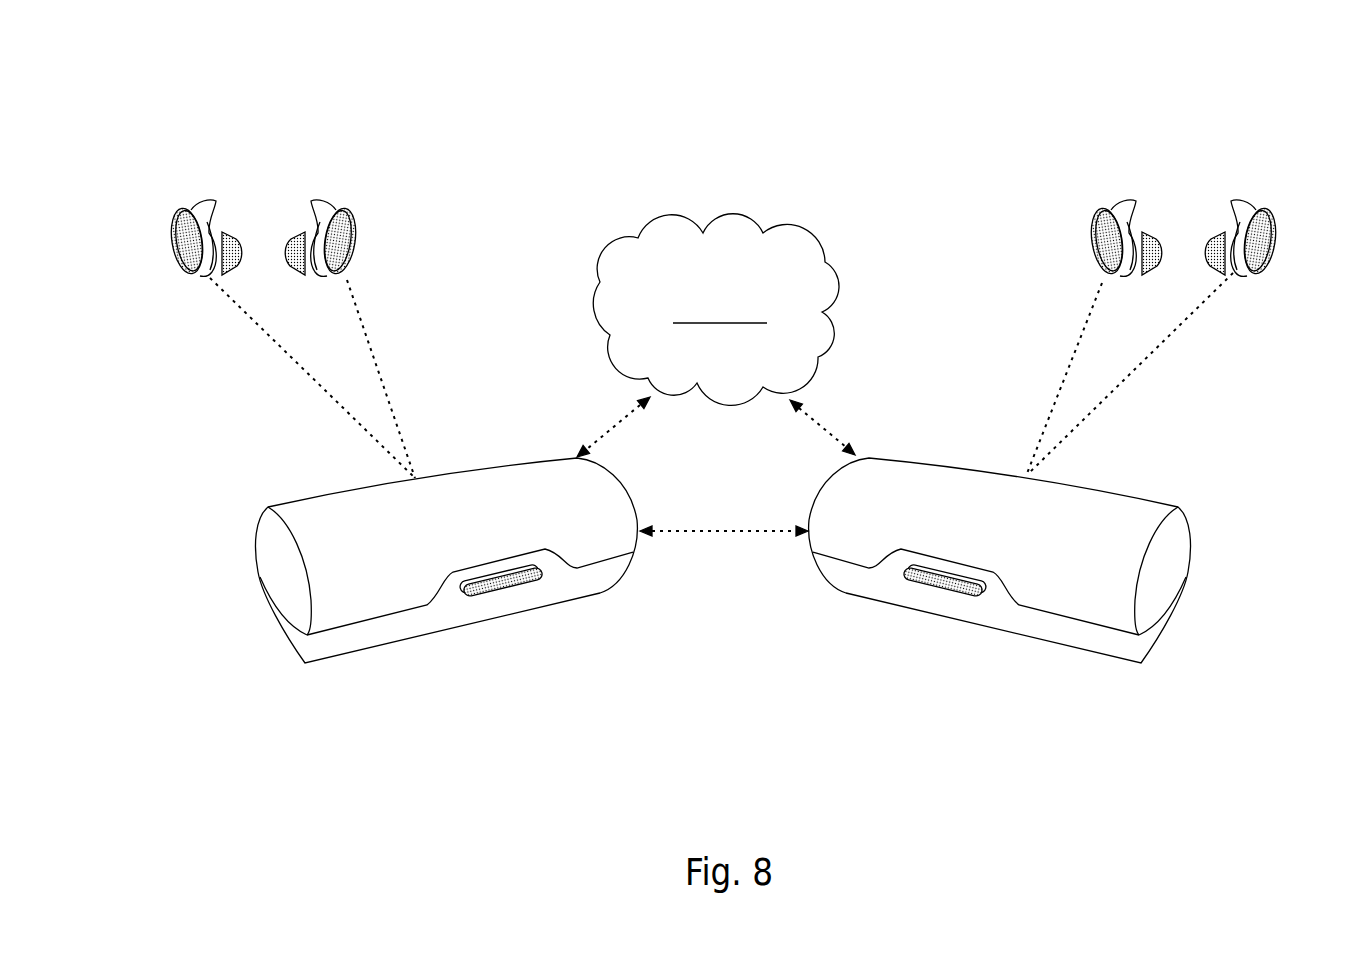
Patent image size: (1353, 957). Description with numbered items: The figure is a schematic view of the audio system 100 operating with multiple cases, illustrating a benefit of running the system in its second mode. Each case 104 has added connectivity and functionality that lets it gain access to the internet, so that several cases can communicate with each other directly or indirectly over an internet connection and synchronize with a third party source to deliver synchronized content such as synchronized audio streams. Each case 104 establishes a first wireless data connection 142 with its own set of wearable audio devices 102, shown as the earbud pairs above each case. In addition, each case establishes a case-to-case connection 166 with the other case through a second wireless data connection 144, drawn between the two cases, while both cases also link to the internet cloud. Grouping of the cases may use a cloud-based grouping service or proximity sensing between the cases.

The audio system 100 is at (815, 145).
The wearable audio devices 102 is at (255, 203).
The case 104 is at (267, 508).
The first wireless data connection 142 is at (371, 347).
The second wireless data connection 144 is at (730, 582).
The case-to-case connection 166 is at (710, 531).